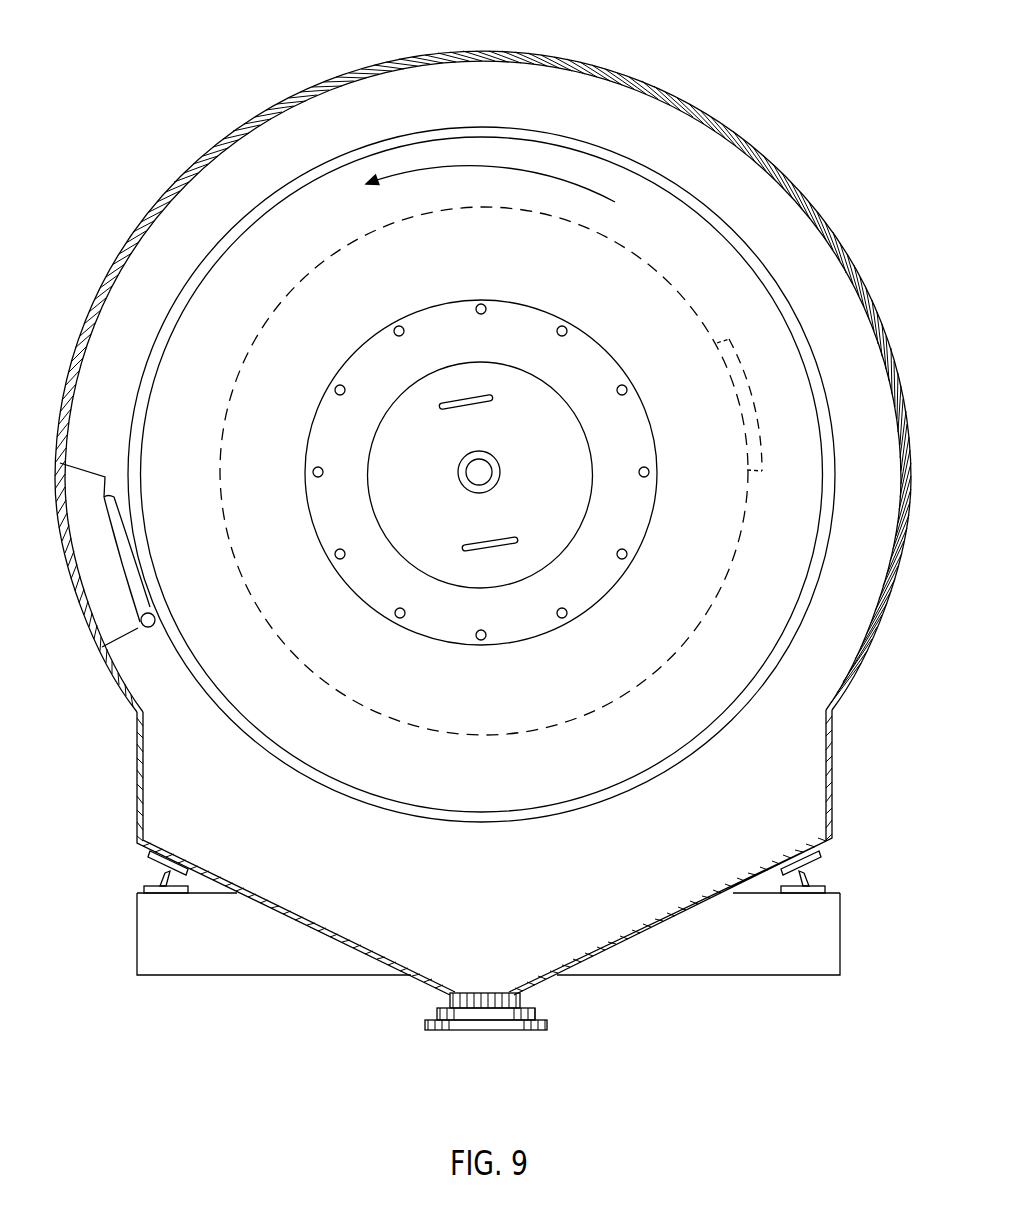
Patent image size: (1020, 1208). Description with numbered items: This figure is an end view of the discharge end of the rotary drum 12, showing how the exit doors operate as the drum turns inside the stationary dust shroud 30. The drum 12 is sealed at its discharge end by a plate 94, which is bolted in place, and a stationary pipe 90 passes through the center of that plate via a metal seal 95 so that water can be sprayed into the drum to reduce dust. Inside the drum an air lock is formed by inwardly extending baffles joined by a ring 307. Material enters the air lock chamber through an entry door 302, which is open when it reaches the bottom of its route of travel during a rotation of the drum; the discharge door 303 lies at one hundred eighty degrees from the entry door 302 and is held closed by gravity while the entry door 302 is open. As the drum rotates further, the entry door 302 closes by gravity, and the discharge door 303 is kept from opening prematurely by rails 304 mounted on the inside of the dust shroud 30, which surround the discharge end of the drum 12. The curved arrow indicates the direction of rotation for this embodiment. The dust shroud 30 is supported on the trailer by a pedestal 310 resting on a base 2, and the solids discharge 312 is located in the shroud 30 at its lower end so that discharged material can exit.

The base 2 is at (265, 977).
The drum 12 is at (637, 787).
The dust shroud 30 is at (397, 57).
The pipe 90 is at (483, 452).
The plate 94 is at (507, 300).
The metal seal 95 is at (497, 480).
The entry door 302 is at (743, 405).
The discharge door 303 is at (118, 517).
The rails 304 is at (125, 637).
The ring 307 is at (540, 728).
The pedestal 310 is at (152, 875).
The solids discharge 312 is at (507, 1030).